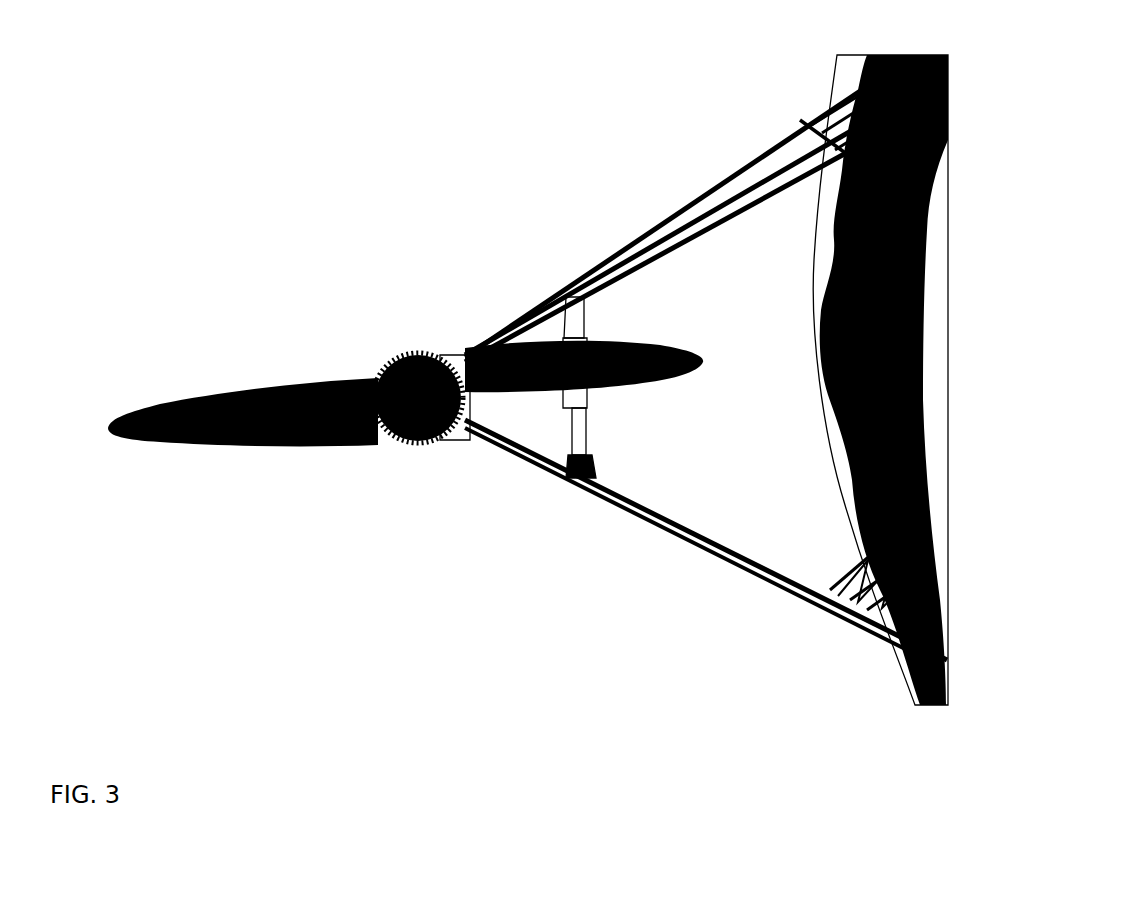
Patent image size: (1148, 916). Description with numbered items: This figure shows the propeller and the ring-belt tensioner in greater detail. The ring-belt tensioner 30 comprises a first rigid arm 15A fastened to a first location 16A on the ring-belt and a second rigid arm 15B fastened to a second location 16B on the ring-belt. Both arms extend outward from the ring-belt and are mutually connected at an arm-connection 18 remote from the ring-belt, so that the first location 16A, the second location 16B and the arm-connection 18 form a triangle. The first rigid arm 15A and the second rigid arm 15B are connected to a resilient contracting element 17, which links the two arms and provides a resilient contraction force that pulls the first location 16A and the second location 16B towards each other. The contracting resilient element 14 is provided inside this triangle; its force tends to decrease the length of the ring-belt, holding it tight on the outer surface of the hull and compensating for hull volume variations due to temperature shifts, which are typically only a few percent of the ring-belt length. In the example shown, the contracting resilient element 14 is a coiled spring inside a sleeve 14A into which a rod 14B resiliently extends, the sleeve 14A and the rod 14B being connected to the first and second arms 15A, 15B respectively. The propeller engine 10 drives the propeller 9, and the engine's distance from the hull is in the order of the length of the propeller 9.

The propeller 9 is at (237, 395).
The propeller engine 10 is at (402, 318).
The ring-belt tensioner 14 is at (672, 398).
The sleeve 14A is at (583, 320).
The rod 14B is at (575, 423).
The first rigid arm 15A is at (700, 190).
The second rigid arm 15B is at (705, 540).
The first location 16A is at (875, 80).
The second location 16B is at (945, 650).
The resilient contracting element 17 is at (831, 352).
The arm-connection 18 is at (447, 357).
The ring-belt tensioner 30 is at (617, 209).